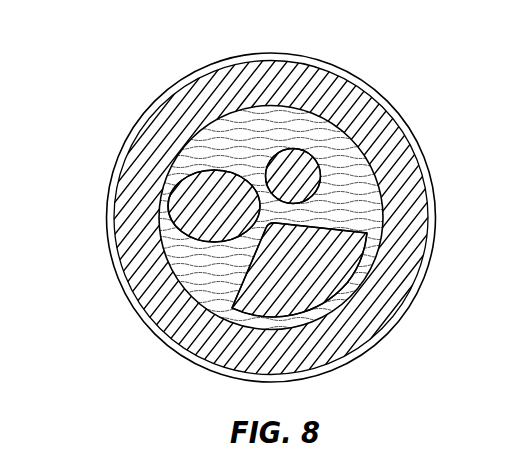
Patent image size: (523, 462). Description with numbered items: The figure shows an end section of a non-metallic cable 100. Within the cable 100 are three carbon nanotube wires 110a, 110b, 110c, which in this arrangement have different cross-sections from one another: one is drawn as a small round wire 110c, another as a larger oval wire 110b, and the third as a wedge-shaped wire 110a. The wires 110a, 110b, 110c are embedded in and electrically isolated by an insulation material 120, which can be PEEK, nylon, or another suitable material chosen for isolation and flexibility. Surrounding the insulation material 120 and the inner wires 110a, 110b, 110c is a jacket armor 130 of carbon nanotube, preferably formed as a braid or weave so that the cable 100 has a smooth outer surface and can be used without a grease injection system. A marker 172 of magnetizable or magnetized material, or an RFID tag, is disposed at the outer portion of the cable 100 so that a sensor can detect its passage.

The cable 100 is at (261, 216).
The marker 172 is at (117, 160).
The jacket armor 130 is at (292, 84).
The insulation material 120 is at (217, 305).
The carbon nanotube wire 110a is at (343, 272).
The carbon nanotube wire 110b is at (183, 232).
The carbon nanotube wire 110c is at (318, 155).